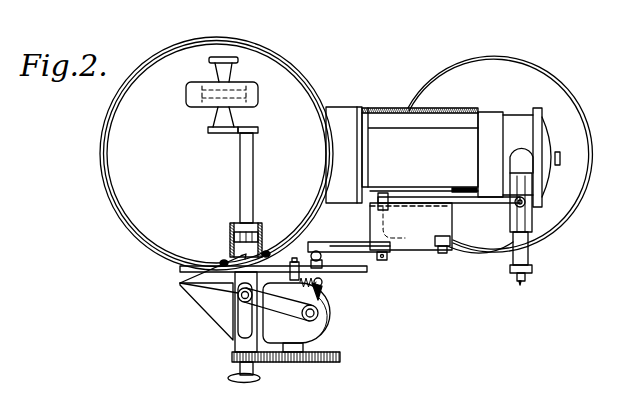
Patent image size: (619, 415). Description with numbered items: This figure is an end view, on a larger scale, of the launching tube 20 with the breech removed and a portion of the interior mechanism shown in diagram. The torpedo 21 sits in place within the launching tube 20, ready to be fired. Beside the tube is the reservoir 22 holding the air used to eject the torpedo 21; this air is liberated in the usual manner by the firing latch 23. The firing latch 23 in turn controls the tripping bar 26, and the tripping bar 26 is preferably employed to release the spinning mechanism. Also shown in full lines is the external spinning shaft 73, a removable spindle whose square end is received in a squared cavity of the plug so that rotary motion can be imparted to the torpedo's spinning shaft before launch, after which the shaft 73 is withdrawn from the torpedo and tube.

The launching tube 20 is at (315, 86).
The torpedo 21 is at (322, 128).
The reservoir 22 is at (567, 90).
The firing latch 23 is at (443, 253).
The tripping bar 26 is at (323, 256).
The external spinning shaft 73 is at (180, 283).